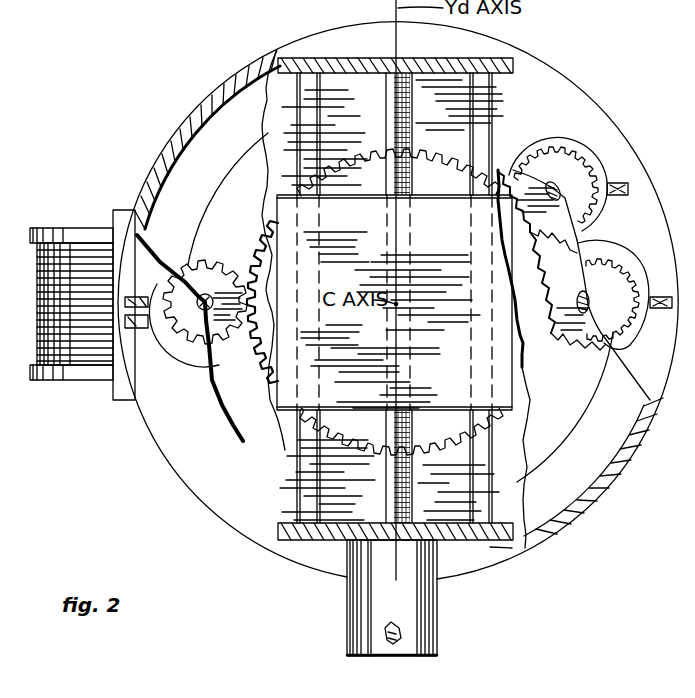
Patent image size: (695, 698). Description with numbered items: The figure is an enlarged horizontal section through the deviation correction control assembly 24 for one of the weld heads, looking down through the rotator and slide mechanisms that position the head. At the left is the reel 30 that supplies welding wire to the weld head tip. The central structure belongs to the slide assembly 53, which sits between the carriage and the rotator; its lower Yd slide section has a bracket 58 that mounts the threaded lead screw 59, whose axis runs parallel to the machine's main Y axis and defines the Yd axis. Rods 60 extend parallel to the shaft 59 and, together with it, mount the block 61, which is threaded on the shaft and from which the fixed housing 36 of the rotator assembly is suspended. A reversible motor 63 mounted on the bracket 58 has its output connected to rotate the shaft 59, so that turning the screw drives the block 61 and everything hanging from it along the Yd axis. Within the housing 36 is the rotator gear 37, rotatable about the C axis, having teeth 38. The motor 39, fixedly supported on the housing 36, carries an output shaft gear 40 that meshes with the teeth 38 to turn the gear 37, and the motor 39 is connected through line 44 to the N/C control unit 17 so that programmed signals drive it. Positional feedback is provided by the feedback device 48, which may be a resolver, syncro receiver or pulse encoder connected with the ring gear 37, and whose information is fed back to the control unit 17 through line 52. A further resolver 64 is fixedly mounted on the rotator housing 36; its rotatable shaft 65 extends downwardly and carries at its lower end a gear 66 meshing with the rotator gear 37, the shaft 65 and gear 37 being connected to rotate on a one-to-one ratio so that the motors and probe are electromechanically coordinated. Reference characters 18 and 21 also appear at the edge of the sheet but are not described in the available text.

The assembly 24 is at (141, 109).
The reel 30 is at (80, 232).
The fixed housing 36 is at (618, 476).
The gear 37 is at (534, 348).
The teeth 38 is at (531, 345).
The motor 39 is at (634, 350).
The output shaft gear 40 is at (589, 354).
The line 44 is at (652, 298).
The feedback device 48 is at (588, 152).
The line 52 is at (628, 188).
The slide assembly 53 is at (488, 545).
The bracket 58 is at (278, 528).
The threaded lead screw 59 is at (393, 84).
The rods 60 is at (290, 88).
The block 61 is at (458, 240).
The reversible motor 63 is at (418, 608).
The resolver 64 is at (170, 350).
The rotatable shaft 65 is at (214, 290).
The gear 66 is at (186, 270).
The N/C control unit 17 is at (694, 93).
The mount 18 is at (685, 15).
The support 21 is at (694, 60).